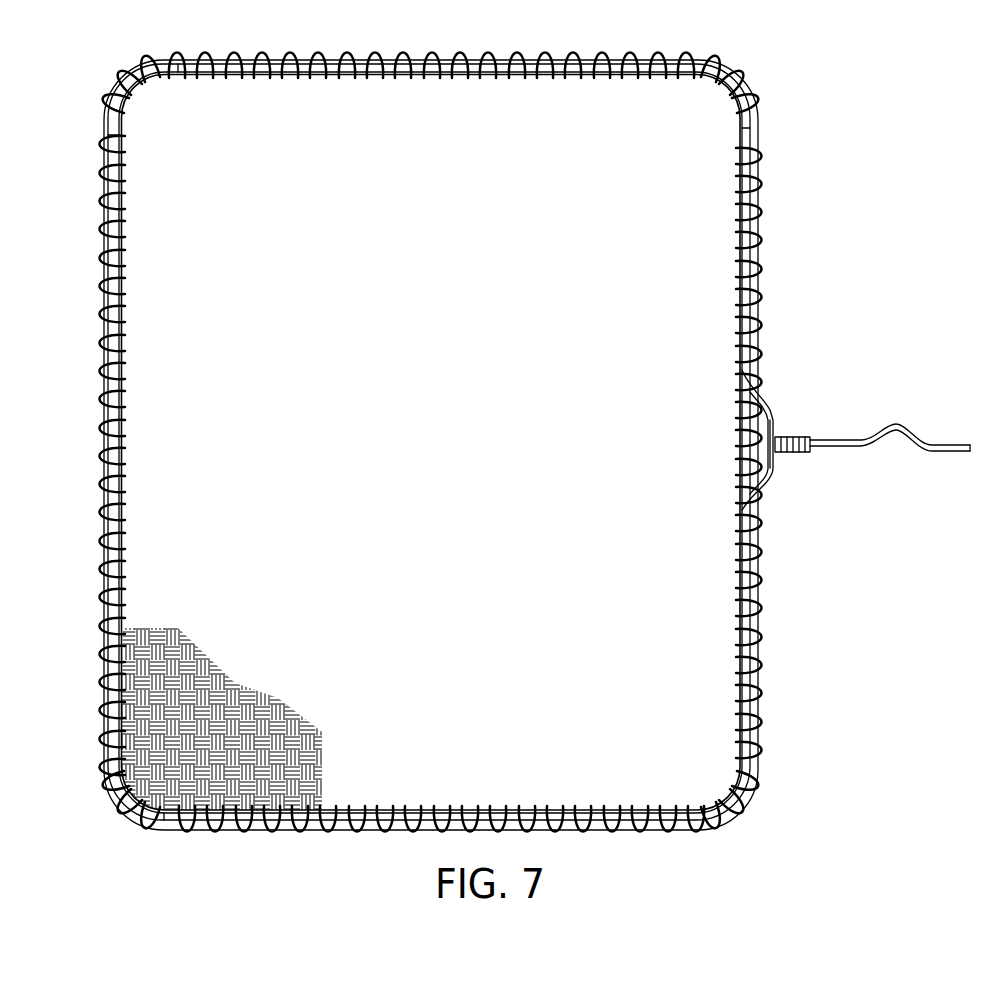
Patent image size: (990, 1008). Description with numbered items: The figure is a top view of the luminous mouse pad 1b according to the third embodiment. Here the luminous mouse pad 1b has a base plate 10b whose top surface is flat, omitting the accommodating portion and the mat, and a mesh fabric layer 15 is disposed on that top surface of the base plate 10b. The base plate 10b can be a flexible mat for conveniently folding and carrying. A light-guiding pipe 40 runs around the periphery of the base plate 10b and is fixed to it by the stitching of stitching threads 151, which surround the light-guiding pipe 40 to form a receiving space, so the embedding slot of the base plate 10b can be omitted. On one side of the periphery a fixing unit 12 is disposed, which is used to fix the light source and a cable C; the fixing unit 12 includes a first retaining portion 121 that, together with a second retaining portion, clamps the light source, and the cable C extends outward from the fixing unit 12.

The luminous mouse pad 1b is at (87, 65).
The mesh fabric layer 15 is at (700, 117).
The stitching threads 151 is at (110, 224).
The base plate 10b is at (750, 193).
The light-guiding pipe 40 is at (762, 278).
The fixing unit 12 is at (757, 402).
The first retaining portion 121 is at (752, 468).
The cable C is at (898, 422).